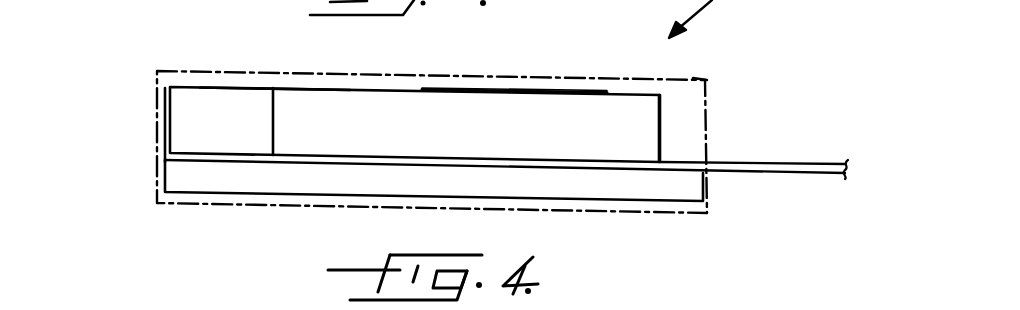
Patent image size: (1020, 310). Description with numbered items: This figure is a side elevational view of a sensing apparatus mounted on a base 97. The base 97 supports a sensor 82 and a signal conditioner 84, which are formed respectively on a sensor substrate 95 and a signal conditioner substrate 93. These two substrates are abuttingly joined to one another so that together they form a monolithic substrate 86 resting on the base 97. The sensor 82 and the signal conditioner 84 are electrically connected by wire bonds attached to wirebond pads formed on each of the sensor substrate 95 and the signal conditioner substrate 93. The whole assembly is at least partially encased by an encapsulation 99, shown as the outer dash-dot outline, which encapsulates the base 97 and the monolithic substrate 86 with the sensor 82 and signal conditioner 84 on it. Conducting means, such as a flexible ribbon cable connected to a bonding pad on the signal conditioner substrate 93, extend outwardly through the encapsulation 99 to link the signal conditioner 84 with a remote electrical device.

The sensor 82 is at (167, 117).
The signal conditioner 84 is at (588, 88).
The monolithic substrate 86 is at (322, 95).
The signal conditioner substrate 93 is at (662, 132).
The sensor substrate 95 is at (167, 92).
The base 97 is at (703, 185).
The encapsulation 99 is at (695, 78).